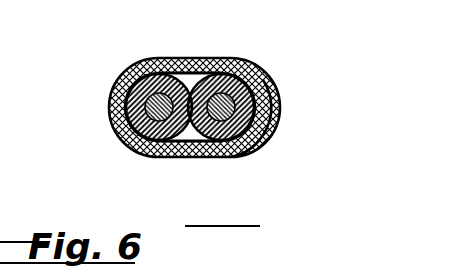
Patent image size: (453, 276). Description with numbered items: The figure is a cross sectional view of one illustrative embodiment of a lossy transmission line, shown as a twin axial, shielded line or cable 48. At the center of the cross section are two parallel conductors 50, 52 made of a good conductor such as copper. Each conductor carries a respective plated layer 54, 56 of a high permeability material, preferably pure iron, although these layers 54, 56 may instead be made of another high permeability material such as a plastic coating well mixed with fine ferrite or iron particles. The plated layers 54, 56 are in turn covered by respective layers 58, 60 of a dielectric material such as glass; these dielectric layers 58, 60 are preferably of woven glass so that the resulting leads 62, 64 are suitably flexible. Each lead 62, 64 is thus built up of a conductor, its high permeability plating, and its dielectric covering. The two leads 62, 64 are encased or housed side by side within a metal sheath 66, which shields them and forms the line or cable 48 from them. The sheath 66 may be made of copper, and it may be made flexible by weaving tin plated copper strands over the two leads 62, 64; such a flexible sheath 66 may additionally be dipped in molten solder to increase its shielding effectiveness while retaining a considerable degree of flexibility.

The twin axial shielded cable 48 is at (201, 55).
The conductor 50 is at (265, 81).
The conductor 52 is at (128, 75).
The plated layer 54 is at (272, 98).
The plated layer 56 is at (126, 94).
The dielectric layer 58 is at (267, 135).
The dielectric layer 60 is at (127, 119).
The lead 62 is at (215, 152).
The lead 64 is at (176, 150).
The metal sheath 66 is at (194, 153).